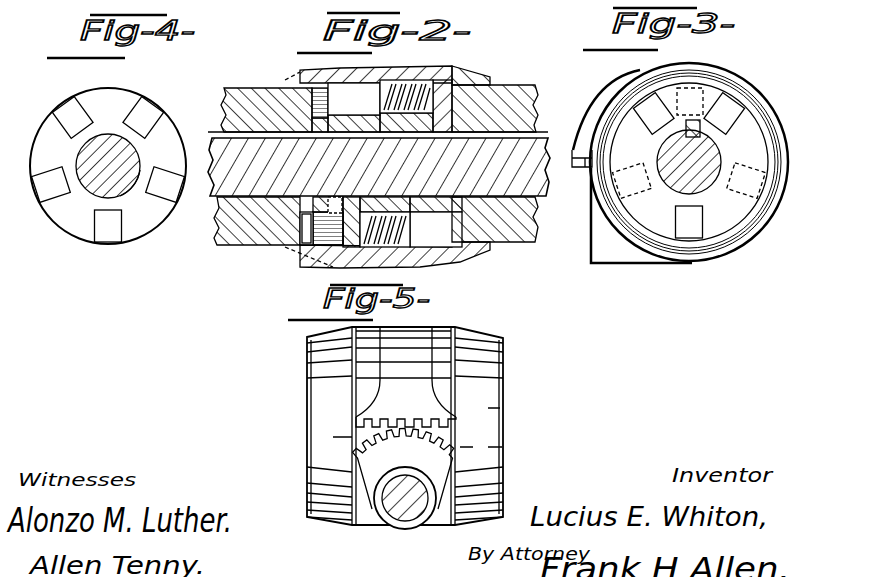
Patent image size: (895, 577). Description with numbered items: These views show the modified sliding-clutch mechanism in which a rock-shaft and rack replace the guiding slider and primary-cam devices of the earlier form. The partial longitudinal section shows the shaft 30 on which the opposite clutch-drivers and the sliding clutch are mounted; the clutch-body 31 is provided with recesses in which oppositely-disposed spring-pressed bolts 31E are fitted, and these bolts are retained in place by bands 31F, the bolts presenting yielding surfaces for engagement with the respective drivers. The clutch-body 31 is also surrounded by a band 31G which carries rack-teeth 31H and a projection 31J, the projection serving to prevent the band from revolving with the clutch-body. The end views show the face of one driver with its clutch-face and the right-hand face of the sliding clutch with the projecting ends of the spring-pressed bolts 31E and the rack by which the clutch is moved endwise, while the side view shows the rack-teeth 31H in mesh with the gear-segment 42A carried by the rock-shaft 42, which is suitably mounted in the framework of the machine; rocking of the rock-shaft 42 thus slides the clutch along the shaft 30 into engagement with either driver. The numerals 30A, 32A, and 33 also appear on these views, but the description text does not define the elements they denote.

In FIG. 4, the shaft 30 is at (105, 177).
In FIG. 2, the shaft 30 is at (357, 196).
In FIG. 2, the spindle shaft / key 30A is at (379, 167).
In FIG. 3, the spindle shaft / key 30A is at (698, 120).
In FIG. 2, the clutch-body 31 is at (447, 80).
In FIG. 2, the spring-pressed bolts 31E is at (395, 165).
In FIG. 3, the spring-pressed bolts 31E is at (693, 233).
In FIG. 2, the bands 31F is at (490, 78).
In FIG. 3, the bands 31F is at (670, 78).
In FIG. 5, the bands 31F is at (338, 391).
In FIG. 2, the band 31G is at (380, 139).
In FIG. 3, the rack-teeth 31H is at (585, 162).
In FIG. 5, the rack-teeth 31H is at (406, 377).
In FIG. 3, the projection 31J is at (620, 257).
In FIG. 4, the jaw block 32A is at (160, 140).
In FIG. 2, the jaw block 32A is at (252, 93).
In FIG. 2, the side block 33 is at (520, 102).
In FIG. 5, the rock-shaft 42 is at (407, 500).
In FIG. 5, the gear-segment 42A is at (403, 469).